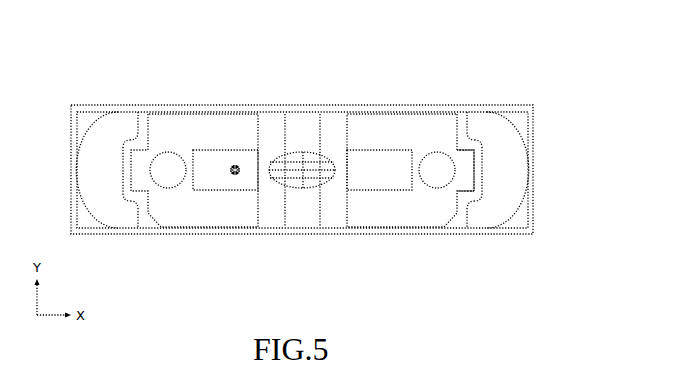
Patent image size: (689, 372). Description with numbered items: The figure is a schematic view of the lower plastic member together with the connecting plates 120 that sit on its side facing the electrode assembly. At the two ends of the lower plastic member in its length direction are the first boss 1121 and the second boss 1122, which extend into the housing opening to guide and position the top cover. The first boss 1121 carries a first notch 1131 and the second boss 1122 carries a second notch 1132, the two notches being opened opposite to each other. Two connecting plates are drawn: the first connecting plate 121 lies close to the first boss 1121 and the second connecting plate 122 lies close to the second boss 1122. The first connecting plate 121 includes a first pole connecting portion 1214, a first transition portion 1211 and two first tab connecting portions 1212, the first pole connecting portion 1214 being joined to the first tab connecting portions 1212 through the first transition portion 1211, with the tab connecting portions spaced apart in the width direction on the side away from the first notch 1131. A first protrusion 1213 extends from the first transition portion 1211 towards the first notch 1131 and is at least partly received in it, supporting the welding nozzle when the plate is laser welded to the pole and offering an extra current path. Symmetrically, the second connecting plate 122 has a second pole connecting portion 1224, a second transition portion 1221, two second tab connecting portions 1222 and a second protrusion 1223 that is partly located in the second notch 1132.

The connecting plate 120 is at (385, 38).
The first connecting plate 121 is at (275, 67).
The second connecting plate 122 is at (473, 67).
The first boss 1121 is at (84, 128).
The second boss 1122 is at (506, 125).
The first notch 1131 is at (108, 212).
The second notch 1132 is at (504, 214).
The first transition portion 1211 is at (166, 140).
The first tab connecting portion 1212 is at (280, 154).
The first protrusion 1213 is at (136, 130).
The first pole connecting portion 1214 is at (203, 148).
The second transition portion 1221 is at (437, 150).
The second tab connecting portion 1222 is at (358, 118).
The second protrusion 1223 is at (470, 132).
The second pole connecting portion 1224 is at (400, 150).